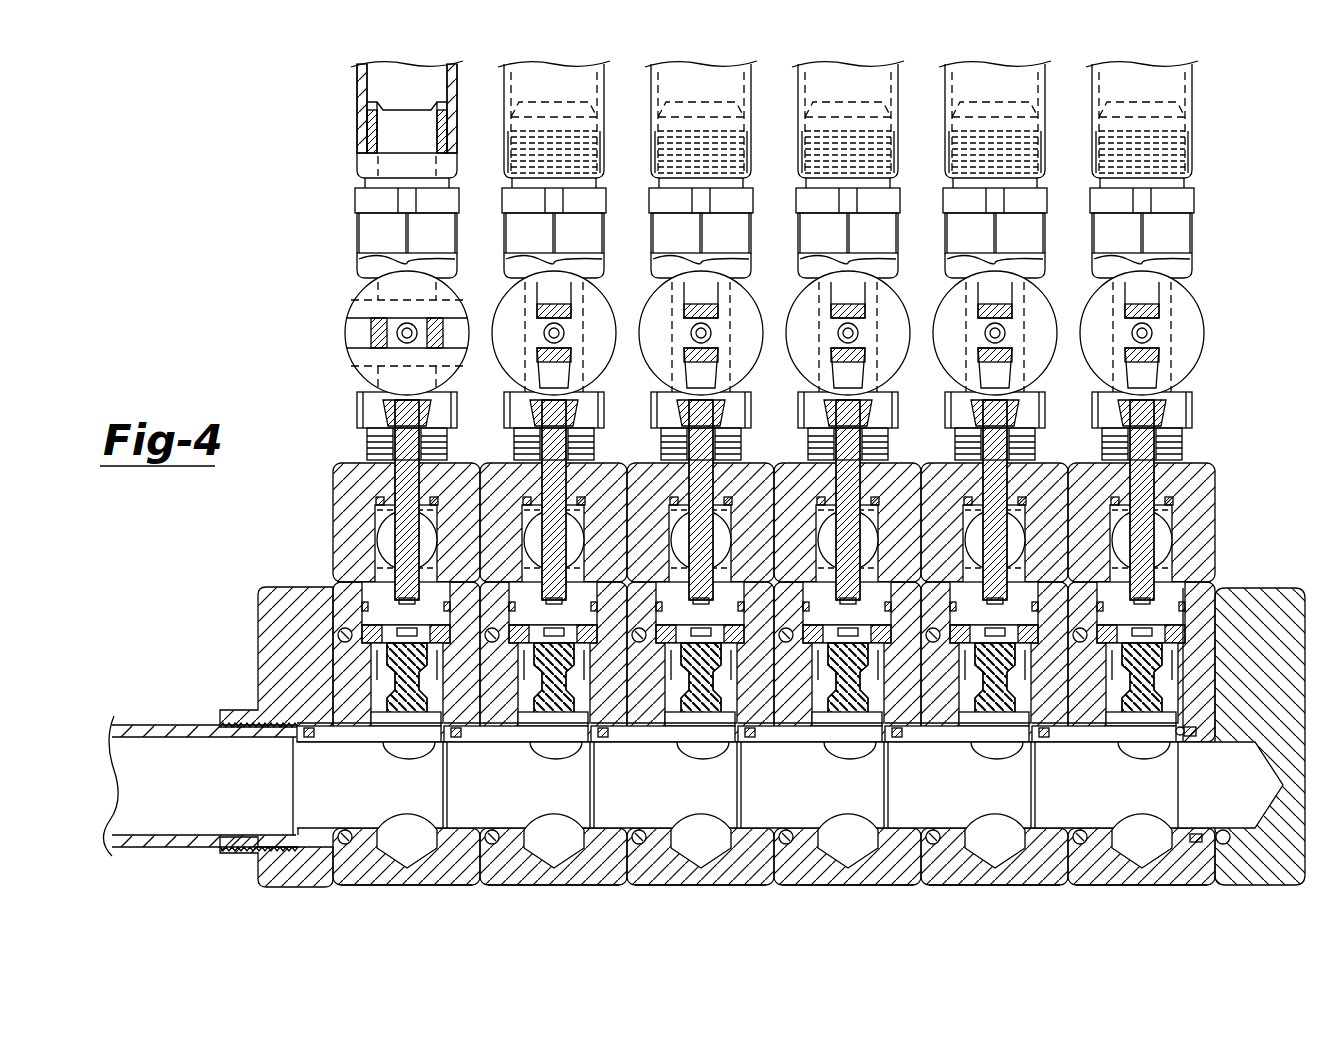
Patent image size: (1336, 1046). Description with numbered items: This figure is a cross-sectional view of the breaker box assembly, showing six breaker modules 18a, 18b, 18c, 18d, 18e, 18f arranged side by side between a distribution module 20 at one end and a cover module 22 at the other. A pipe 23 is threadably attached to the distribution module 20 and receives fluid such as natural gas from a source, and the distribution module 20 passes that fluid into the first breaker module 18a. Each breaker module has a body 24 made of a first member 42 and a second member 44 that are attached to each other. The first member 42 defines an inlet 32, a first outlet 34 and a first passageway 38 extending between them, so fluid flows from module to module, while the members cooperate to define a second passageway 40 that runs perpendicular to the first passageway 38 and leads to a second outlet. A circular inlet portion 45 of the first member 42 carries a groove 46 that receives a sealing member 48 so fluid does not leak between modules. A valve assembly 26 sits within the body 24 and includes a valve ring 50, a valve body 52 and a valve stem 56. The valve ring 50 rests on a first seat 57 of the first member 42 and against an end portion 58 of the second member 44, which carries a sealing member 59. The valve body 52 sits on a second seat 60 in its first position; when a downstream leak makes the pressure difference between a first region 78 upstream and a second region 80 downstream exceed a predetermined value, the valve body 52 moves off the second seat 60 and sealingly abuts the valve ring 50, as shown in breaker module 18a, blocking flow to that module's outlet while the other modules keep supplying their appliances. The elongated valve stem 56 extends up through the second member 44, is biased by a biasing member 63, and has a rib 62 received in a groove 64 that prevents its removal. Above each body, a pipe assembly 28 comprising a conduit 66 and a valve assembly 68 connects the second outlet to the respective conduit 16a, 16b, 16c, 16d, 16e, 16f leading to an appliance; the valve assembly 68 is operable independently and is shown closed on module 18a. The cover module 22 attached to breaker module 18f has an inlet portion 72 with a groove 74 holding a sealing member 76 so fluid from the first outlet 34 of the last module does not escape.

The conduit 16a is at (451, 80).
The conduit 16b is at (598, 80).
The conduit 16c is at (745, 80).
The conduit 16d is at (892, 80).
The conduit 16e is at (1039, 80).
The conduit 16f is at (1186, 80).
The pipe assembly 28 is at (459, 150).
The conduit 66 is at (451, 270).
The valve assembly 68 is at (459, 312).
The valve stem 56 is at (393, 412).
The biasing member 63 is at (400, 430).
The rib 62 is at (386, 503).
The groove 64 is at (433, 501).
The valve assembly 26 is at (523, 500).
The second member 44 is at (345, 480).
The second region 80 is at (378, 560).
The second passageway 40 is at (430, 566).
The sealing member 59 is at (362, 604).
The end portion 58 is at (452, 607).
The first seat 57 is at (341, 637).
The valve ring 50 is at (528, 680).
The first region 78 is at (383, 705).
The sealing member 48 is at (430, 723).
The second seat 60 is at (377, 720).
The groove 46 is at (313, 738).
The inlet portion 45 is at (315, 746).
The valve body 52 is at (435, 748).
The inlet 32 is at (317, 798).
The first outlet 34 is at (435, 812).
The first passageway 38 is at (397, 810).
The first member 42 is at (358, 882).
The body 24 is at (382, 888).
The breaker module 18a is at (430, 890).
The breaker module 18b is at (578, 890).
The breaker module 18c is at (728, 890).
The breaker module 18d is at (873, 890).
The breaker module 18e is at (1020, 890).
The breaker module 18f is at (1165, 890).
The distribution module 20 is at (267, 615).
The pipe 23 is at (131, 728).
The cover module 22 is at (1278, 590).
The groove 74 is at (1193, 741).
The sealing member 76 is at (1197, 731).
The inlet portion 72 is at (1203, 843).